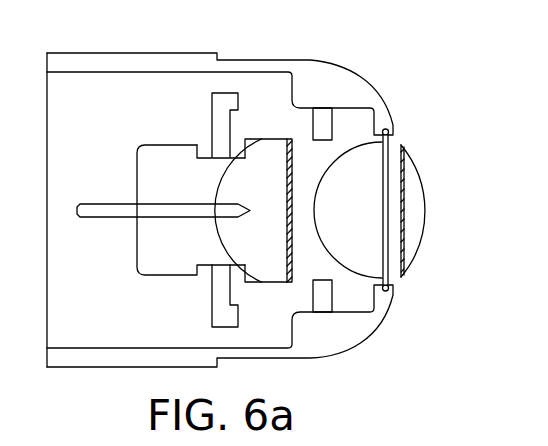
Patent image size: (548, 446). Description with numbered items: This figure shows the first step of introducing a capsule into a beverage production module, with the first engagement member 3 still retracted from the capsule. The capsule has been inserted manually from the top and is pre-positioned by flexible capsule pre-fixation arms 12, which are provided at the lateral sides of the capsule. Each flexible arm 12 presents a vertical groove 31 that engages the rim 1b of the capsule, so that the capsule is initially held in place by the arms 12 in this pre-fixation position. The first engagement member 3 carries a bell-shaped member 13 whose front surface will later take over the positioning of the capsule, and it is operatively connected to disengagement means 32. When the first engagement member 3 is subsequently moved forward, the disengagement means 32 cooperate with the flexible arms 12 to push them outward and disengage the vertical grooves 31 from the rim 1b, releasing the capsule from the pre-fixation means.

The flexible capsule pre-fixation arm 12 is at (357, 82).
The vertical groove 31 is at (385, 128).
The rim 1b is at (395, 140).
The bell-shaped member 13 is at (258, 140).
The first engagement member 3 is at (173, 157).
The disengagement means 32 is at (225, 97).